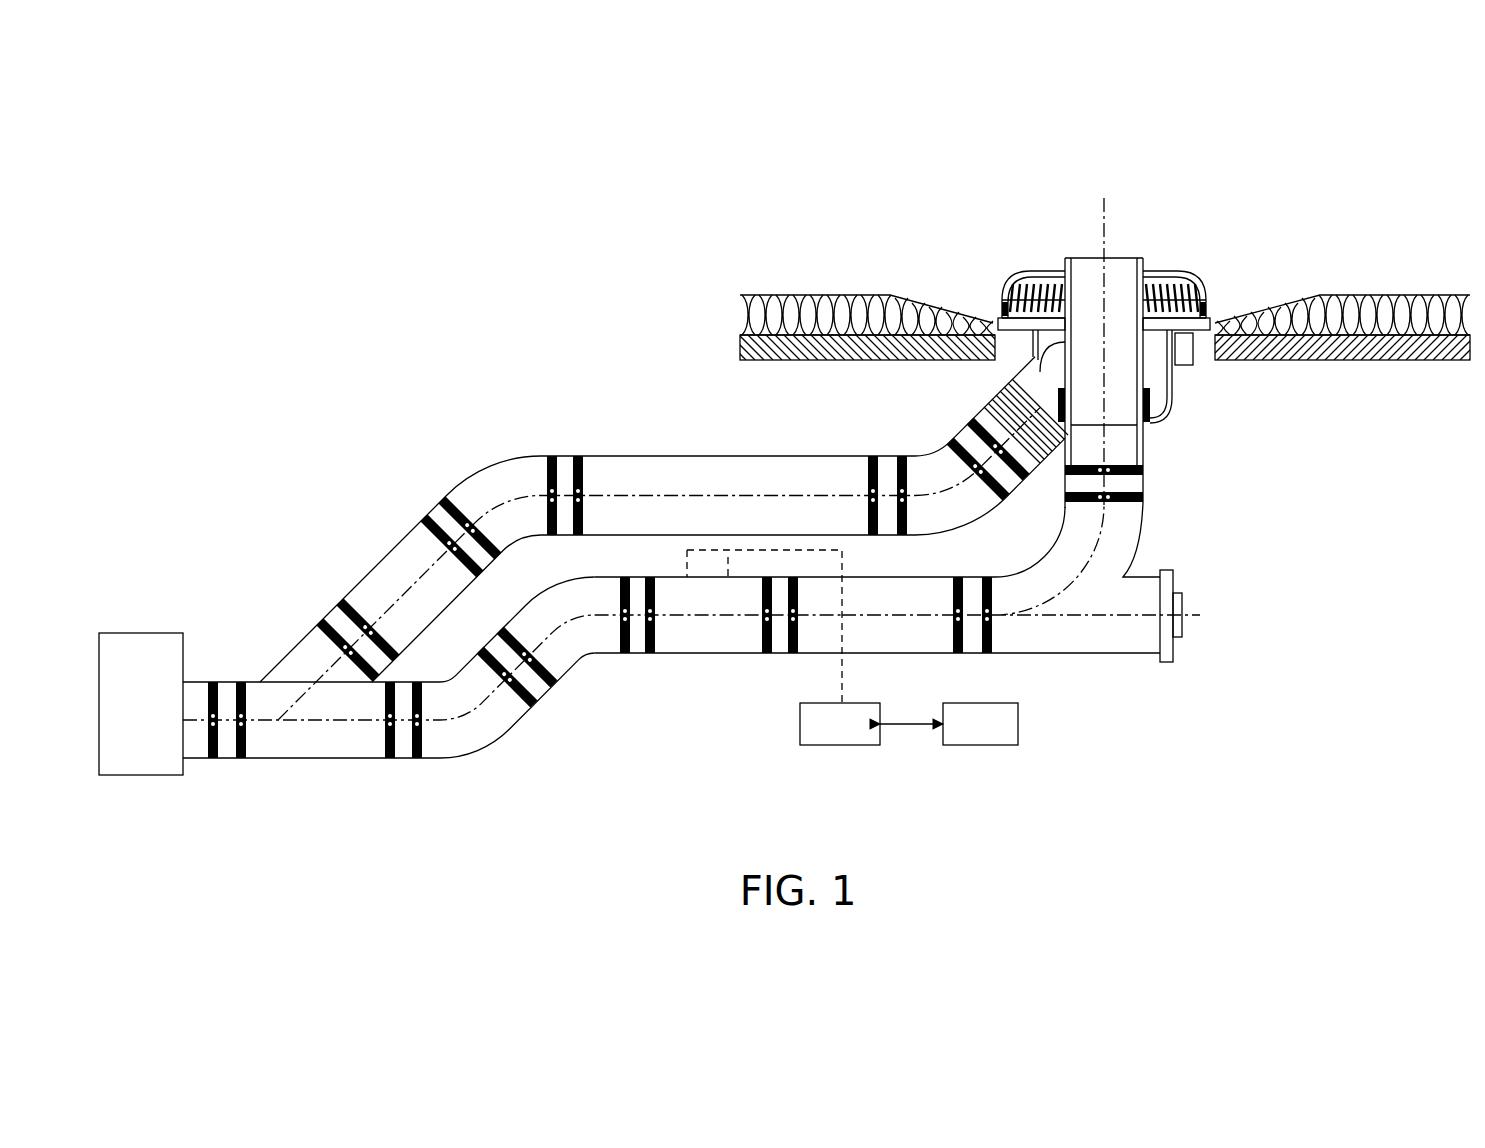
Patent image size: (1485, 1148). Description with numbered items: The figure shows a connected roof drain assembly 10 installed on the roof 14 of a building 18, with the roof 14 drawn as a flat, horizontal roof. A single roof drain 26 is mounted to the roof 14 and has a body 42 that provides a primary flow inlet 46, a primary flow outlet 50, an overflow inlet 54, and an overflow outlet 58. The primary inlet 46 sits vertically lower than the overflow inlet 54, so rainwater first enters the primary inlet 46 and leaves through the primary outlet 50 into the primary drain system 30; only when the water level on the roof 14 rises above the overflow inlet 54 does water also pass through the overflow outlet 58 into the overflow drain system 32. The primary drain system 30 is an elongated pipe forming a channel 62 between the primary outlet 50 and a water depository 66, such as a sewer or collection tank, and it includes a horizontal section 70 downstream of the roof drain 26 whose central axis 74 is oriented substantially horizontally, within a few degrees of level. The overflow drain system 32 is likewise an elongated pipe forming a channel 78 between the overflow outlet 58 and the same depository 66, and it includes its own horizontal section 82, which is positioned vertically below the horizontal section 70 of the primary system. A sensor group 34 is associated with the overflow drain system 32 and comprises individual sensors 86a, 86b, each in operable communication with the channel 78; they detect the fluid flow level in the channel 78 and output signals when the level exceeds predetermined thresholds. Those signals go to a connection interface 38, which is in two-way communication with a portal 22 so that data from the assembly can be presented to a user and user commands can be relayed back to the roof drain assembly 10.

The connected roof drain assembly 10 is at (684, 142).
The roof 14 is at (817, 297).
The building 18 is at (748, 347).
The portal 22 is at (1003, 745).
The roof drain 26 is at (1183, 273).
The primary drain system 30 is at (692, 456).
The overflow drain system 32 is at (508, 749).
The sensor group 34 is at (690, 575).
The connection interface 38 is at (805, 745).
The body 42 is at (1210, 323).
The primary flow inlet 46 is at (1220, 326).
The primary flow outlet 50 is at (988, 412).
The overflow inlet 54 is at (1143, 258).
The overflow outlet 58 is at (1143, 457).
The channel 62 is at (776, 468).
The water depository 66 is at (145, 655).
The horizontal section 70 is at (630, 452).
The central axis 74 is at (832, 492).
The channel 78 is at (465, 736).
The horizontal section 82 is at (902, 577).
The sensor 86a is at (688, 579).
The sensor 86b is at (730, 578).